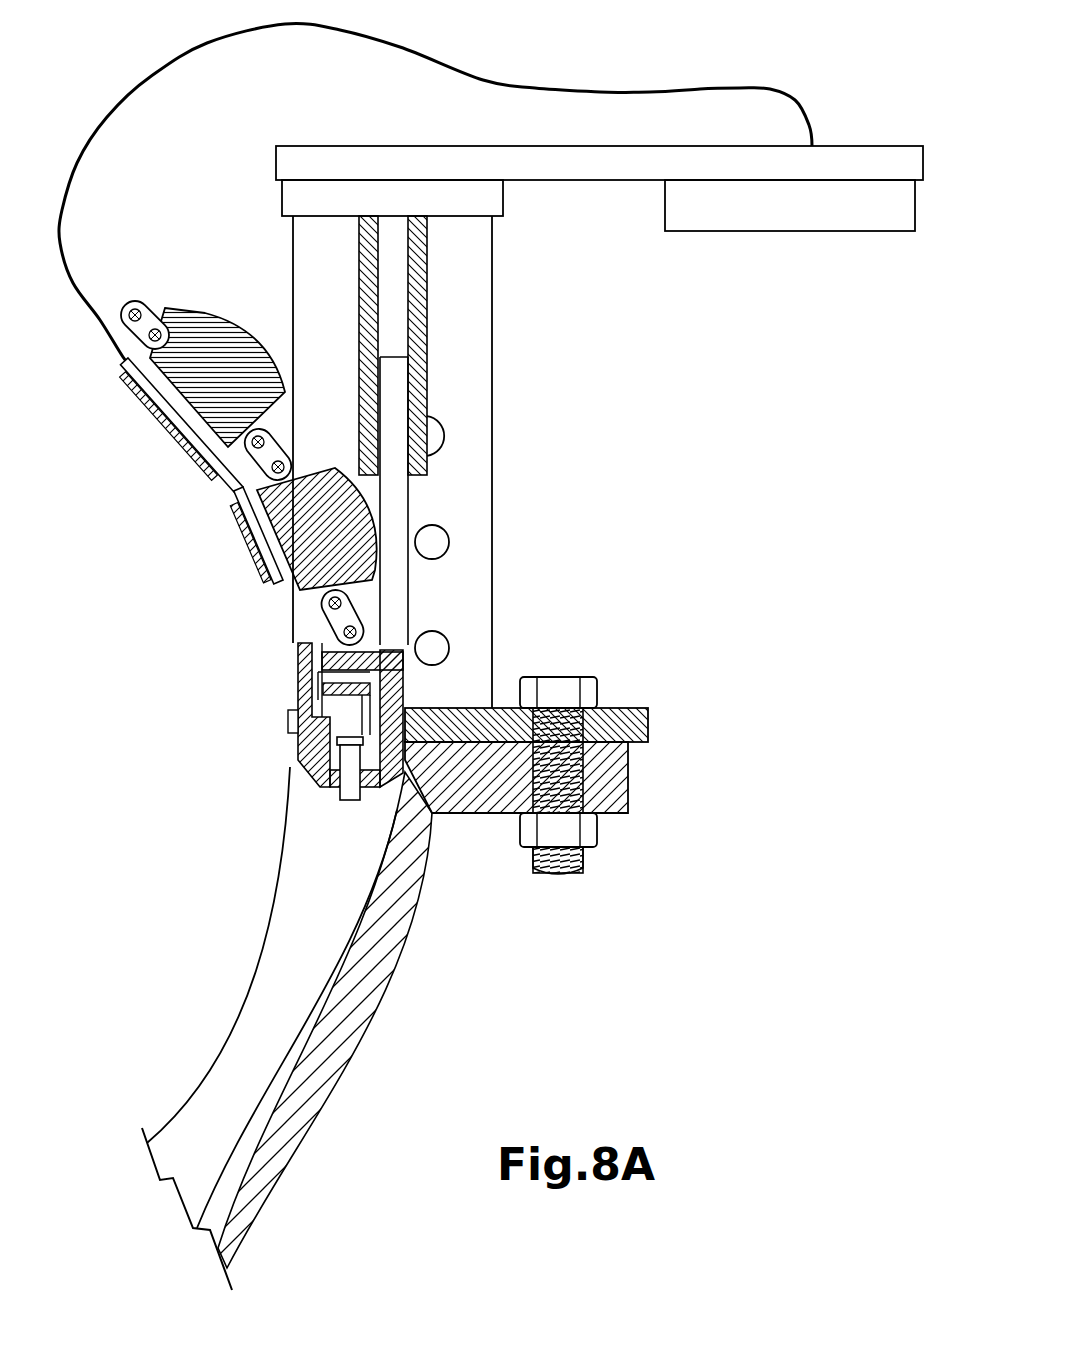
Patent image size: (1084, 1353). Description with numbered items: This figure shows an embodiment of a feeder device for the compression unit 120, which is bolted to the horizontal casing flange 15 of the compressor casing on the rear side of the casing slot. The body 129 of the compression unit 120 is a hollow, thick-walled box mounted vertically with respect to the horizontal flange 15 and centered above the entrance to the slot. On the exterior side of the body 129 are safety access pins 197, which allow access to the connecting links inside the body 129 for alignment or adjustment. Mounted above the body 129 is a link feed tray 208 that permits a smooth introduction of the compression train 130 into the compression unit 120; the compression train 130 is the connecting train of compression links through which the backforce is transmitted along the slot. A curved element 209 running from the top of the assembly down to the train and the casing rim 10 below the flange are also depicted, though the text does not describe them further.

The wheel rim 10 is at (353, 1087).
The mounting bracket 15 is at (628, 780).
The support assembly 120 is at (770, 47).
The support column 129 is at (493, 352).
The link assembly 130 is at (238, 554).
The rollers 197 is at (449, 636).
The block 208 is at (800, 231).
The cable 209 is at (535, 88).